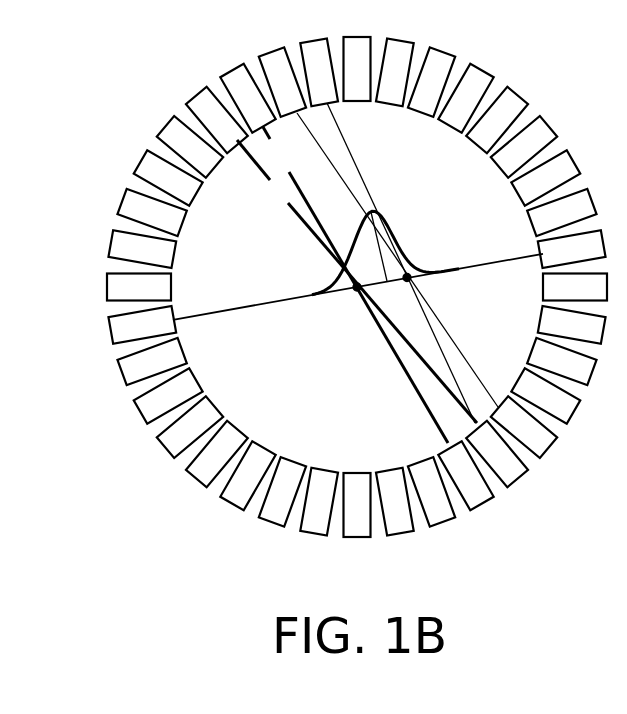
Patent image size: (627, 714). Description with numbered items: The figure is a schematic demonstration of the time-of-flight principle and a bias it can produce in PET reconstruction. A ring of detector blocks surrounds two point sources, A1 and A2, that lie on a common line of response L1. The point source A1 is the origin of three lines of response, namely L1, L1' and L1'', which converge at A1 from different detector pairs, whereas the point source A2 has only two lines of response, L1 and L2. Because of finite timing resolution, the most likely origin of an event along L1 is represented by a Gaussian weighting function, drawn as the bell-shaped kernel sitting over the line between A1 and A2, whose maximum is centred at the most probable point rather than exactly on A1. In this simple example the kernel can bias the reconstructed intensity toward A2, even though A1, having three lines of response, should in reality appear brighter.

The line of response L1 is at (358, 287).
The line of response L1' is at (357, 281).
The line of response L1'' is at (355, 285).
The line of response L2 is at (397, 263).
The point source A1 is at (349, 303).
The point source A2 is at (435, 289).